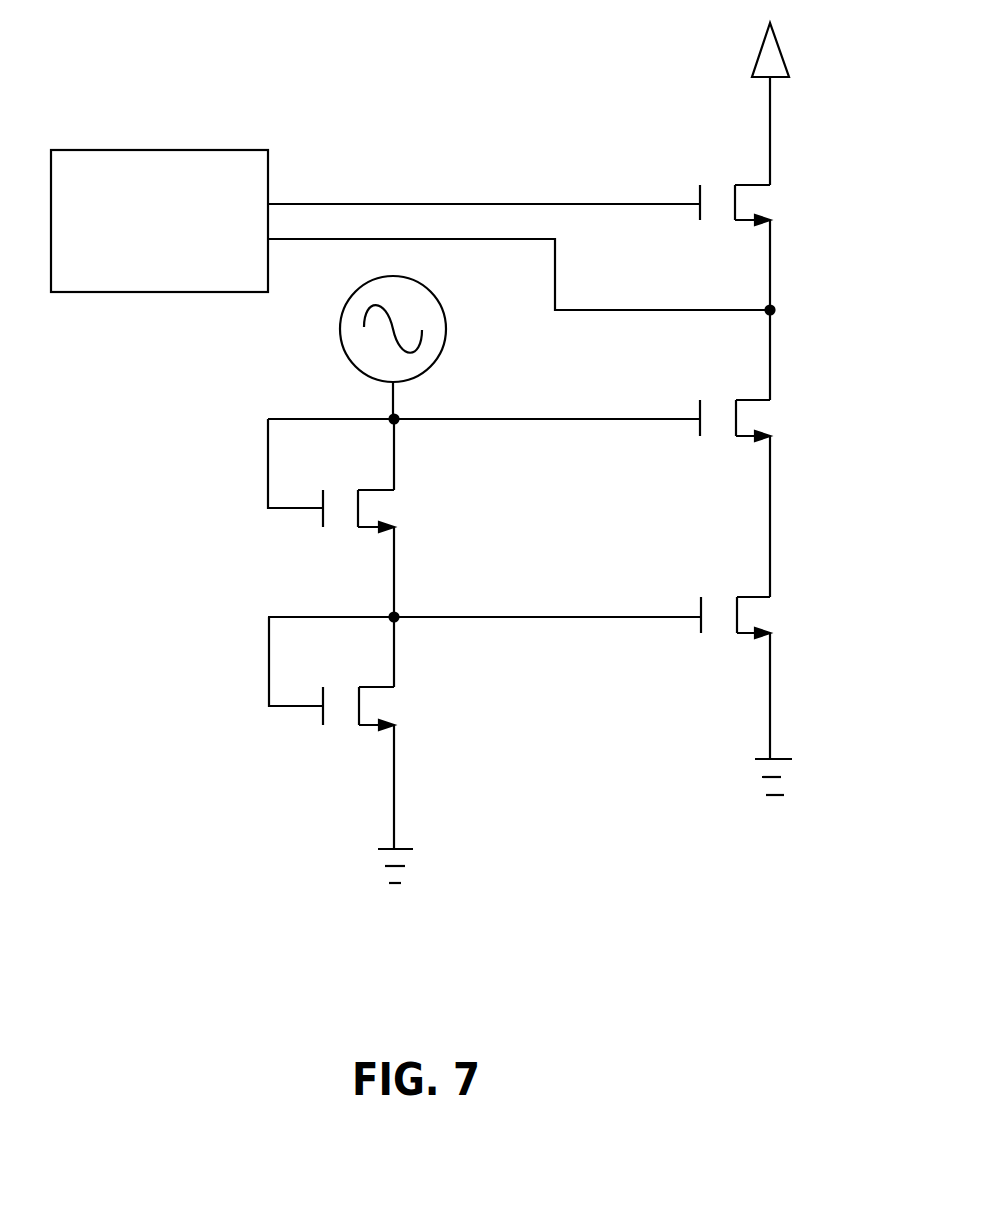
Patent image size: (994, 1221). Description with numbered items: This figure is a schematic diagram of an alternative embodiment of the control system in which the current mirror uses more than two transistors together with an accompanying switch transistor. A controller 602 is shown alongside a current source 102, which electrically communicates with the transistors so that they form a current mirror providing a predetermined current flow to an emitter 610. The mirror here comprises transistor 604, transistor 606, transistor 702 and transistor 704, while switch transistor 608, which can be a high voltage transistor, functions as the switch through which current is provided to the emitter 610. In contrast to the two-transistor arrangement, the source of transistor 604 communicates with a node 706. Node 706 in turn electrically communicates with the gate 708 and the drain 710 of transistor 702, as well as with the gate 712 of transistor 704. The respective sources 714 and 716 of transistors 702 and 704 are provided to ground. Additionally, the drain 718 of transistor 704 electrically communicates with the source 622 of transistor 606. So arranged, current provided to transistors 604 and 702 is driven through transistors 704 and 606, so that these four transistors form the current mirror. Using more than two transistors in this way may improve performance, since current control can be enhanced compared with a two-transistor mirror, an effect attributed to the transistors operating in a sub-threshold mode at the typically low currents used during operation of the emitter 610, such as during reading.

The controller 602 is at (105, 150).
The emitter 610 is at (780, 45).
The switch transistor 608 is at (674, 240).
The current source 102 is at (447, 328).
The transistor 606 is at (674, 457).
The source of transistor 606 622 is at (760, 432).
The transistor 604 is at (296, 548).
The node 706 is at (397, 613).
The gate of transistor 704 712 is at (683, 613).
The drain of transistor 704 718 is at (755, 596).
The source of transistor 704 716 is at (760, 629).
The transistor 704 is at (674, 654).
The gate of transistor 702 708 is at (305, 707).
The drain of transistor 702 710 is at (378, 687).
The source of transistor 702 714 is at (384, 720).
The transistor 702 is at (297, 744).